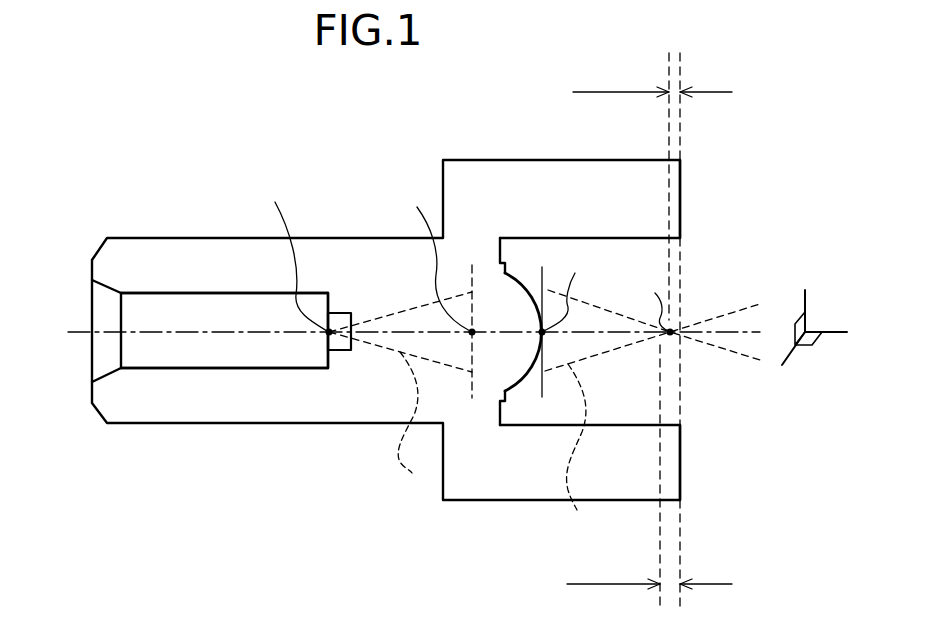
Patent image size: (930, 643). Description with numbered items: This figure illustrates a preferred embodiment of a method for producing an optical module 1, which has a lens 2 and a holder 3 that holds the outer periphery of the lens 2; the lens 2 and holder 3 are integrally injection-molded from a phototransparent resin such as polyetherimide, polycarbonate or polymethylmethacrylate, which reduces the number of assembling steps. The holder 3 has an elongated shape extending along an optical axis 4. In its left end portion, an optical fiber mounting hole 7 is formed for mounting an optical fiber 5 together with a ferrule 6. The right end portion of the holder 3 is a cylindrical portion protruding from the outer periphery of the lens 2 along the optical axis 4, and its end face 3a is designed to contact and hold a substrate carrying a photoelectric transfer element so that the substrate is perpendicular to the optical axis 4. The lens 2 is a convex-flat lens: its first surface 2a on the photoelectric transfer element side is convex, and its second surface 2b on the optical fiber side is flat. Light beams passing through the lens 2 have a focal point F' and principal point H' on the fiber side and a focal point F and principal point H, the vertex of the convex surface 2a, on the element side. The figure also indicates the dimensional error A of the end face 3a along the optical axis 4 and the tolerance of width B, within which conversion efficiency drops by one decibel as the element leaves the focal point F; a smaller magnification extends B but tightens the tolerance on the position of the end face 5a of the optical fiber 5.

The optical module 1 is at (115, 224).
The lens 2 is at (509, 278).
The first surface 2a is at (518, 283).
The second surface 2b is at (348, 318).
The holder 3 is at (160, 237).
The end face 3a is at (682, 195).
The optical axis 4 is at (140, 332).
The optical fiber 5 is at (188, 369).
The end face of the optical fiber 5a is at (333, 352).
The ferrule 6 is at (253, 369).
The optical fiber mounting hole 7 is at (201, 295).